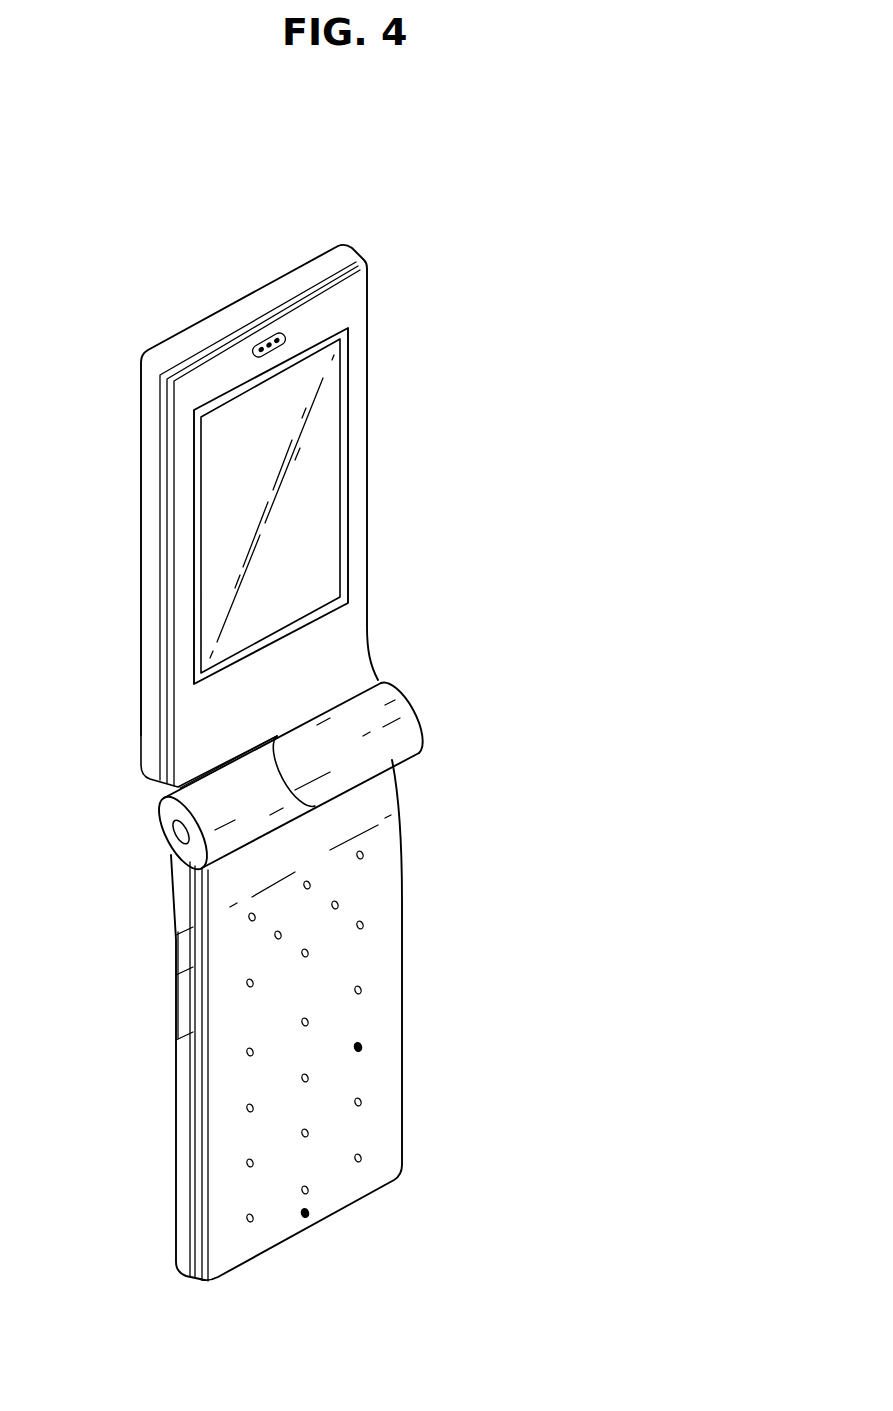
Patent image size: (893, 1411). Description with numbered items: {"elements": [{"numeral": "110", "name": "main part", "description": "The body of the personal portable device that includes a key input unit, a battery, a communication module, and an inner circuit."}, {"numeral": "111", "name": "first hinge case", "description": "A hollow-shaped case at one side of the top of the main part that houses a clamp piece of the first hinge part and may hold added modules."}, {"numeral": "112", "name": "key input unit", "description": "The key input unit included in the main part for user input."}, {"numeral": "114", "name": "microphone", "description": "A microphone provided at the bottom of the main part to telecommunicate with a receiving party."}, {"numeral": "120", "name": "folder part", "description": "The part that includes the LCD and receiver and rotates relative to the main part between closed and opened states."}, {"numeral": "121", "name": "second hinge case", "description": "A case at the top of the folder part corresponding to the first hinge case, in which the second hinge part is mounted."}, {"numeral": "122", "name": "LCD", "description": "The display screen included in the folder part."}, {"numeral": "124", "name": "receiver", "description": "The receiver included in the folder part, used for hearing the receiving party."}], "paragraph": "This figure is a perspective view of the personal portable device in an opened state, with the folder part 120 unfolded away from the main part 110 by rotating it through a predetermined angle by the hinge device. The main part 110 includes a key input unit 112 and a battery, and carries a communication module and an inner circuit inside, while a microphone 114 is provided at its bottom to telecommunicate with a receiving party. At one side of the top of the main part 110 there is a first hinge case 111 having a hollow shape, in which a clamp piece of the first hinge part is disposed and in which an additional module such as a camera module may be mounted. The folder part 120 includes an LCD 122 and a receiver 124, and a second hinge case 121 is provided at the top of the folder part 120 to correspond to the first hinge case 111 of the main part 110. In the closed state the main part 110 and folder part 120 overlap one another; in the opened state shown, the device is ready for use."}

The main body (first housing) 110 is at (420, 926).
The hinge shaft 111 is at (200, 855).
The key 112 is at (358, 1047).
The key 114 is at (305, 1213).
The folder (second housing) 120 is at (373, 415).
The hinge 121 is at (383, 707).
The display 122 is at (315, 517).
The speaker 124 is at (275, 340).